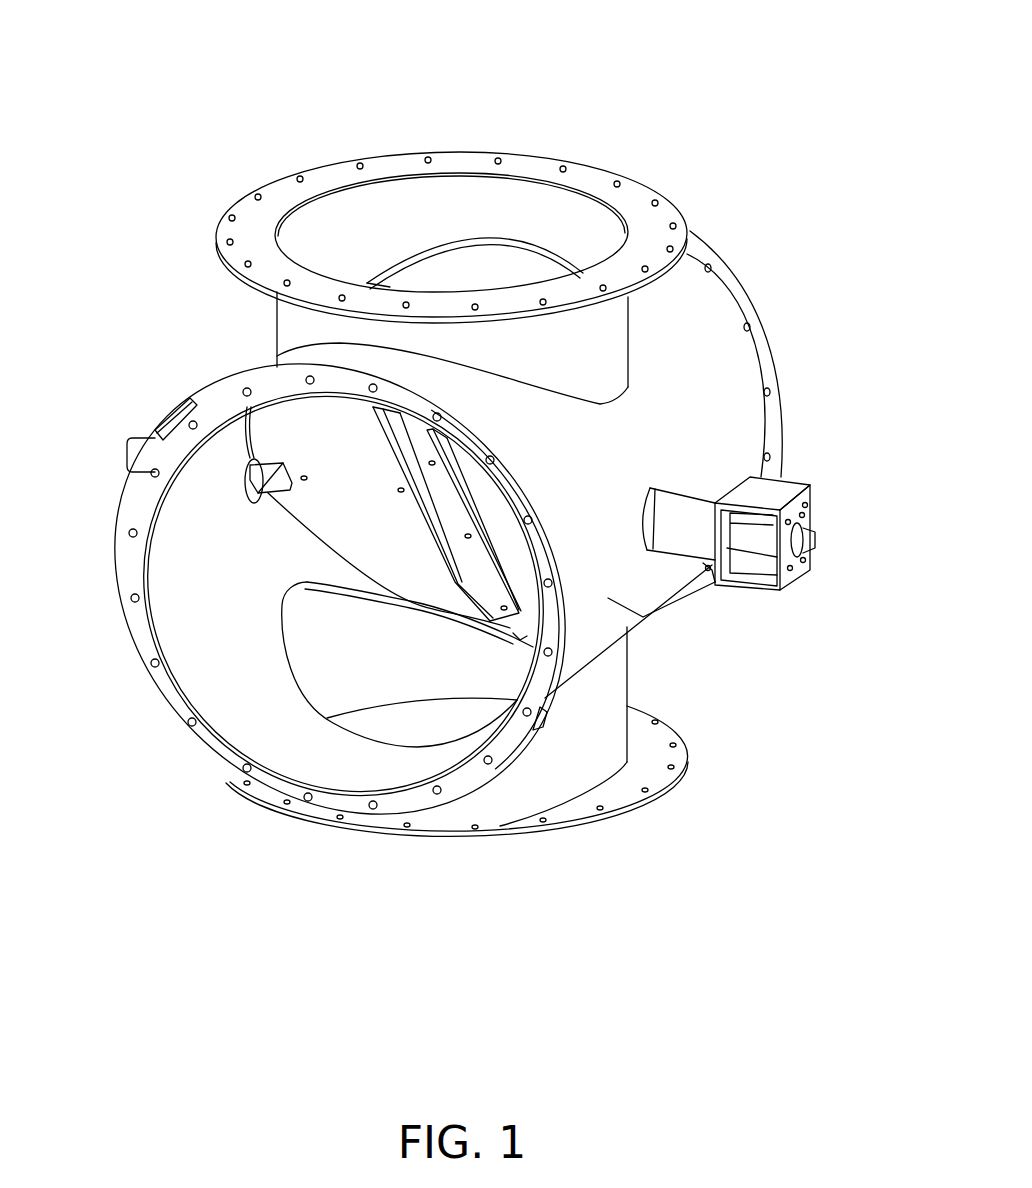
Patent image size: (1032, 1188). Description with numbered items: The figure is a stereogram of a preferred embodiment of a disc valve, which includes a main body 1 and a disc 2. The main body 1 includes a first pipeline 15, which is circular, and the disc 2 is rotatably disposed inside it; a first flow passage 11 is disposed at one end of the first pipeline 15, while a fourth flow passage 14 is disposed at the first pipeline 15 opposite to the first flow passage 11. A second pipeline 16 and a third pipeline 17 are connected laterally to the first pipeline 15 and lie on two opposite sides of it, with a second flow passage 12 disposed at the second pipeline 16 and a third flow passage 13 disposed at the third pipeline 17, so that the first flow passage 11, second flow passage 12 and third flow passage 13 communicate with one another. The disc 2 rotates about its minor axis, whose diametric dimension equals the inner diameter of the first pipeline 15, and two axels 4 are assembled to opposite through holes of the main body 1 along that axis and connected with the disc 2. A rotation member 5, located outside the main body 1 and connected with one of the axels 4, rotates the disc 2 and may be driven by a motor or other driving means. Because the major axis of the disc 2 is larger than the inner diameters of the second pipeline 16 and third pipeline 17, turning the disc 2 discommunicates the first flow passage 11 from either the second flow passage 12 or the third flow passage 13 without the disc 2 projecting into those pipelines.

The main body 1 is at (476, 501).
The disc 2 is at (285, 413).
The axel 4 is at (250, 476).
The rotation member 5 is at (817, 541).
The first flow passage 11 is at (232, 722).
The second flow passage 12 is at (547, 840).
The third flow passage 13 is at (390, 202).
The fourth flow passage 14 is at (804, 409).
The first pipeline 15 is at (643, 617).
The second pipeline 16 is at (607, 760).
The third pipeline 17 is at (597, 340).